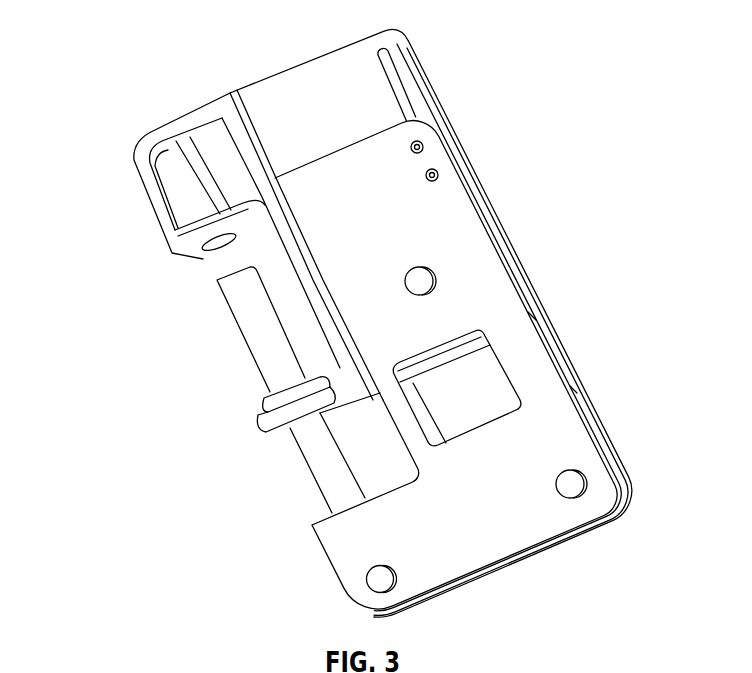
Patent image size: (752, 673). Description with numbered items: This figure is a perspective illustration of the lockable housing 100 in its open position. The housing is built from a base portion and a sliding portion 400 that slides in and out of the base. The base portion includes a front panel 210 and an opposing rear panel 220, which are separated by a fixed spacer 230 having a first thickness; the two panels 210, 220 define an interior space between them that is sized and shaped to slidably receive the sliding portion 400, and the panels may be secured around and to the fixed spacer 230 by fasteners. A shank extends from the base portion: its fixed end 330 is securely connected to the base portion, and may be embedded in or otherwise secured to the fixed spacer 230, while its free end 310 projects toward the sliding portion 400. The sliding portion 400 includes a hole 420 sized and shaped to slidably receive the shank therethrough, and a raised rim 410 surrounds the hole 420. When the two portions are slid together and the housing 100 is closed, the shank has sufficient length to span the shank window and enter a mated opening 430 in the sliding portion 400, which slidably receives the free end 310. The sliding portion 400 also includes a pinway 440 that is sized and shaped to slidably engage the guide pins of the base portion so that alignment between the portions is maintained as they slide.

The lockable housing 100 is at (114, 51).
The front panel 210 is at (610, 513).
The rear panel 220 is at (628, 488).
The fixed spacer 230 is at (613, 470).
The free end 310 is at (243, 264).
The fixed end 330 is at (332, 513).
The sliding portion 400 is at (308, 134).
The raised rim 410 is at (268, 407).
The hole 420 is at (321, 412).
The mated opening 430 is at (213, 245).
The pinway 440 is at (403, 87).